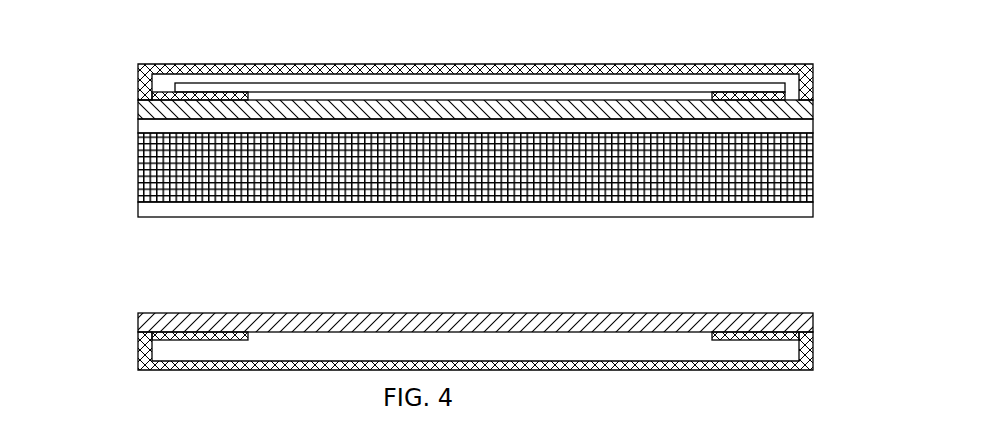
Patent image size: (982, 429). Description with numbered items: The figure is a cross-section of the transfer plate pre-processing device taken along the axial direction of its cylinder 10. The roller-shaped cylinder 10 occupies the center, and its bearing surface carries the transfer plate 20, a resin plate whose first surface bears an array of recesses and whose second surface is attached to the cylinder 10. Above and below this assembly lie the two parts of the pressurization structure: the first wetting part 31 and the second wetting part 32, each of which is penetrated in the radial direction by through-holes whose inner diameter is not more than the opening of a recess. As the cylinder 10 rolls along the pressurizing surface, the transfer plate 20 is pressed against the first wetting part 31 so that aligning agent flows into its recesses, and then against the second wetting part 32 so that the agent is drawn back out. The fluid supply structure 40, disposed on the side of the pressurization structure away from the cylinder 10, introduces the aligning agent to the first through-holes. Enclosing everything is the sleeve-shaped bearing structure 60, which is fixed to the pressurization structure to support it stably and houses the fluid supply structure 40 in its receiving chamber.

The cylinder 10 is at (802, 157).
The transfer plate 20 is at (138, 204).
The first wetting part 31 is at (813, 108).
The second wetting part 32 is at (790, 317).
The fluid supply structure 40 is at (520, 90).
The bearing structure 60 is at (137, 343).